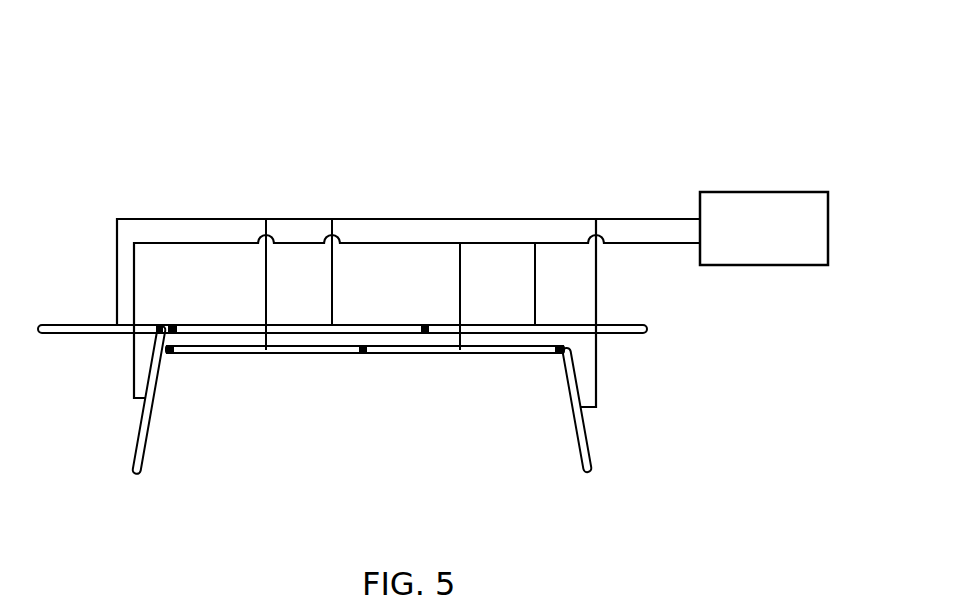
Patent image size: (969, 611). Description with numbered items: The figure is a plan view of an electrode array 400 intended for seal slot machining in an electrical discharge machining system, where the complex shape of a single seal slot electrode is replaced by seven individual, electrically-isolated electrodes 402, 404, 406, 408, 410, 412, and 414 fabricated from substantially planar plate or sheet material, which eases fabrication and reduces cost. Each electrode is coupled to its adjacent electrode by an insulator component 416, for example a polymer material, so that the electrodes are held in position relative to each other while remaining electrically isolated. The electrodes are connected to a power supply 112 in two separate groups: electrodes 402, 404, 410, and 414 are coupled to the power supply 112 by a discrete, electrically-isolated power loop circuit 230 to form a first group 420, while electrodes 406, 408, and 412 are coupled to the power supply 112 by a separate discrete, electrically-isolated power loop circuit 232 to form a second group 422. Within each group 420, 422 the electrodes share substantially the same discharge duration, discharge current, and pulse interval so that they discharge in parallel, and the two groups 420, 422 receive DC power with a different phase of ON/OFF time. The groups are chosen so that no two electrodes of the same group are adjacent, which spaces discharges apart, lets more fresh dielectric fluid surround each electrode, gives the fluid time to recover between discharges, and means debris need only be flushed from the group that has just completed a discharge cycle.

The electrode array 400 is at (771, 85).
The power supply 112 is at (772, 191).
The power loop circuit 230 is at (648, 217).
The power loop circuit 232 is at (660, 246).
The electrode 402 is at (74, 324).
The electrode 404 is at (302, 324).
The electrode 406 is at (502, 324).
The electrode 408 is at (142, 458).
The electrode 410 is at (263, 354).
The electrode 412 is at (458, 354).
The electrode 414 is at (583, 457).
The insulator component 416 is at (172, 324).
The first group 420 is at (158, 212).
The second group 422 is at (393, 234).